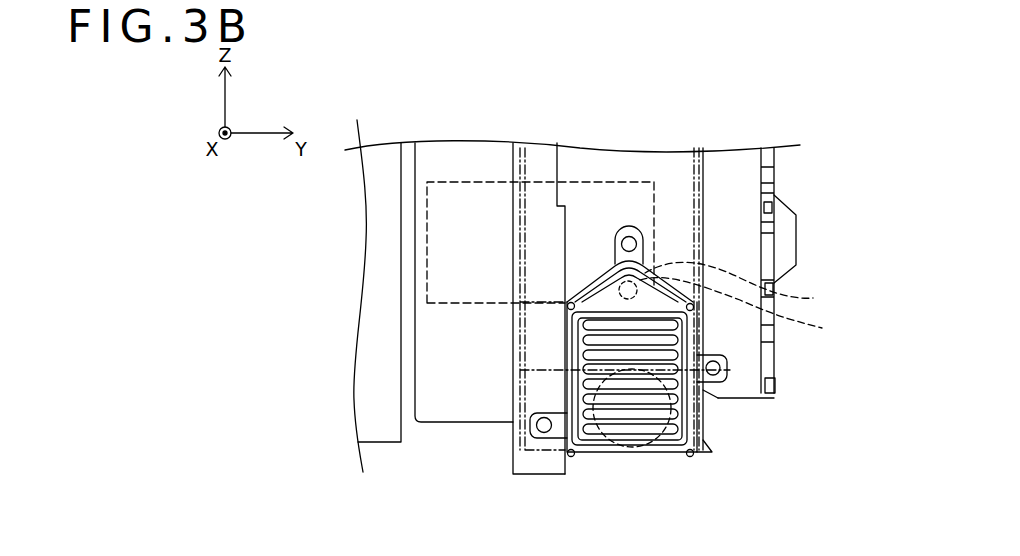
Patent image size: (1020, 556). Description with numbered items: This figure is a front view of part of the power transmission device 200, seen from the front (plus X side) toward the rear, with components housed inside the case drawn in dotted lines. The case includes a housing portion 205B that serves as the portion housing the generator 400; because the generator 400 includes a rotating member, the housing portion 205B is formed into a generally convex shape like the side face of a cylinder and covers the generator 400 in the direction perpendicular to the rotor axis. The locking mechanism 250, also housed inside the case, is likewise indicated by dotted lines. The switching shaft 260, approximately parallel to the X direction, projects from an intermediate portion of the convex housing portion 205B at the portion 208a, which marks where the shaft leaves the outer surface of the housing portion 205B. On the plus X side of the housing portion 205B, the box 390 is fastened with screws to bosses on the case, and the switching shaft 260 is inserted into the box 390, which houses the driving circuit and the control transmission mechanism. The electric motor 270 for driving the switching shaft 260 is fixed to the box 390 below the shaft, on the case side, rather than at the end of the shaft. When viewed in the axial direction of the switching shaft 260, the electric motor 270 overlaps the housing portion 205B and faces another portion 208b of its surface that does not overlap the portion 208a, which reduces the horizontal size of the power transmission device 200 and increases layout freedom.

The power transmission device 200 is at (823, 409).
The housing portion 205B is at (688, 170).
The portion where the switching shaft projects 208a is at (765, 312).
The another portion of the housing portion surface 208b is at (710, 450).
The locking mechanism 250 is at (444, 303).
The switching shaft 260 is at (813, 298).
The electric motor 270 is at (712, 403).
The box 390 is at (653, 447).
The generator 400 is at (702, 178).